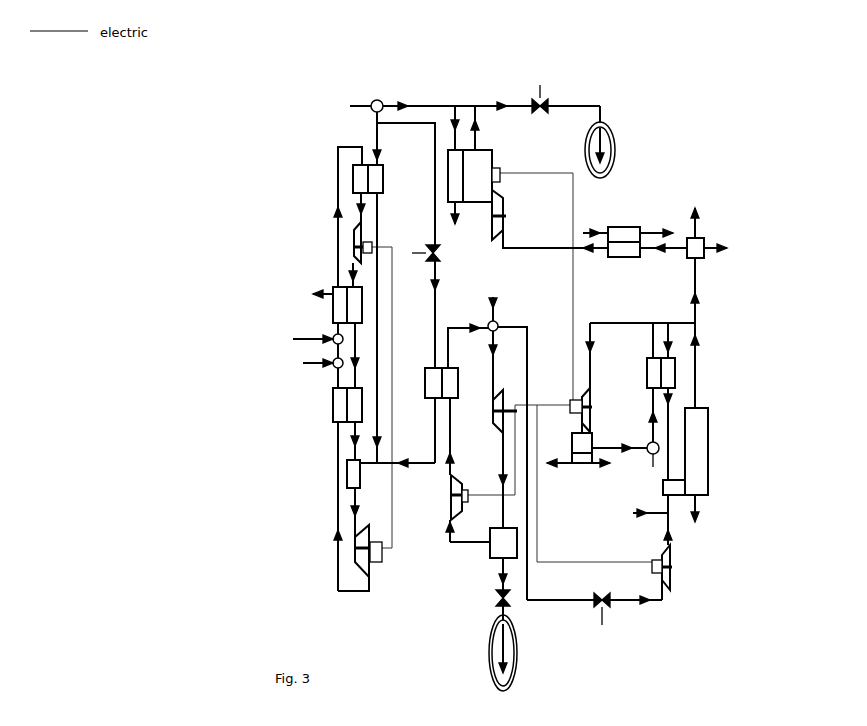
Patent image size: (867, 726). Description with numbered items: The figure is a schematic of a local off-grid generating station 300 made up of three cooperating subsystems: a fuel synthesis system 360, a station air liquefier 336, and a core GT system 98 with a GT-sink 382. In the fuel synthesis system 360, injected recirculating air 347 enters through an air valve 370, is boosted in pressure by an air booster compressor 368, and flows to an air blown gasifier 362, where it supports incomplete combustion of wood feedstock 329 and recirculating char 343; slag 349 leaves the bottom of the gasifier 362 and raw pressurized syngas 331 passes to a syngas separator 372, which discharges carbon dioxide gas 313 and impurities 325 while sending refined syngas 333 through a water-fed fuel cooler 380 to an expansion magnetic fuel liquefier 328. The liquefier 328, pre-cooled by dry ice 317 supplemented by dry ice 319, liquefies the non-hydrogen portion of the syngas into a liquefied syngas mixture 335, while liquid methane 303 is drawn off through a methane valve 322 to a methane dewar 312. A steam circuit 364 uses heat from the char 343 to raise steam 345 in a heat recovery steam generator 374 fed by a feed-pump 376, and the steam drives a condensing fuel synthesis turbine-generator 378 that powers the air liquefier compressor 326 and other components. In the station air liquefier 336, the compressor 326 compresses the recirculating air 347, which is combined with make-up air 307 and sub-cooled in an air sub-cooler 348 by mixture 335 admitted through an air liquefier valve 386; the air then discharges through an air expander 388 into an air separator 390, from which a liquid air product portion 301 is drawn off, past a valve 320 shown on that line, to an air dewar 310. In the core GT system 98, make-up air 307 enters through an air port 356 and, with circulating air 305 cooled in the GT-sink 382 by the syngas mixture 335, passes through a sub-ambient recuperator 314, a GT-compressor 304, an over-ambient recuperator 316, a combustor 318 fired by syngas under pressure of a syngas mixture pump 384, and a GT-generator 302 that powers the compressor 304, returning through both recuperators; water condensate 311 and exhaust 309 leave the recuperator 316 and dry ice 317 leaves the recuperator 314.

The local off-grid generating station 300 is at (530, 62).
The dry ice from external sources 319 is at (453, 122).
The dry ice 317 is at (313, 292).
The syngas mixture pump 384 is at (370, 110).
The methane valve 322 is at (547, 102).
The liquid methane 303 is at (501, 108).
The methane dewar 312 is at (613, 133).
The liquefied syngas mixture 335 is at (402, 108).
The GT-sink 382 is at (380, 177).
The refined syngas 333 is at (380, 444).
The circulating air 305 is at (352, 272).
The GT-compressor 304 is at (363, 234).
The expansion magnetic fuel liquefier 328 is at (496, 190).
The carbon dioxide gas 313 is at (452, 214).
The air liquefier valve 386 is at (442, 250).
The sub-ambient recuperator 314 is at (333, 309).
The air port 356 is at (333, 338).
The make-up air 307 is at (303, 342).
The exhaust 309 is at (314, 368).
The core GT system 98 is at (345, 374).
The over-ambient recuperator 316 is at (332, 407).
The combustor 318 is at (347, 466).
The GT-generator 302 is at (367, 565).
The recirculating air 347 is at (482, 325).
The air sub-cooler 348 is at (444, 377).
The air expander 388 is at (497, 417).
The air liquefier compressor 326 is at (451, 498).
The station air liquefier 336 is at (478, 532).
The air separator 390 is at (497, 547).
The liquid air product portion 301 is at (497, 577).
The valve 320 is at (498, 595).
The air dewar 310 is at (492, 657).
The fuel cooler 380 is at (630, 232).
The water condensate 311 is at (583, 232).
The syngas separator 372 is at (701, 245).
The impurities 325 is at (724, 252).
The raw pressurized syngas 331 is at (692, 333).
The steam circuit 364 is at (615, 367).
The steam 345 is at (596, 347).
The recirculating char 343 is at (671, 347).
The heat recovery steam generator 374 is at (647, 378).
The feed-pump 376 is at (651, 455).
The fuel synthesis turbine-generator 378 is at (585, 428).
The fuel synthesis system 360 is at (686, 401).
The air blown gasifier 362 is at (703, 447).
The wood feedstock 329 is at (636, 514).
The slag 349 is at (702, 513).
The air booster compressor 368 is at (672, 580).
The air valve 370 is at (611, 603).